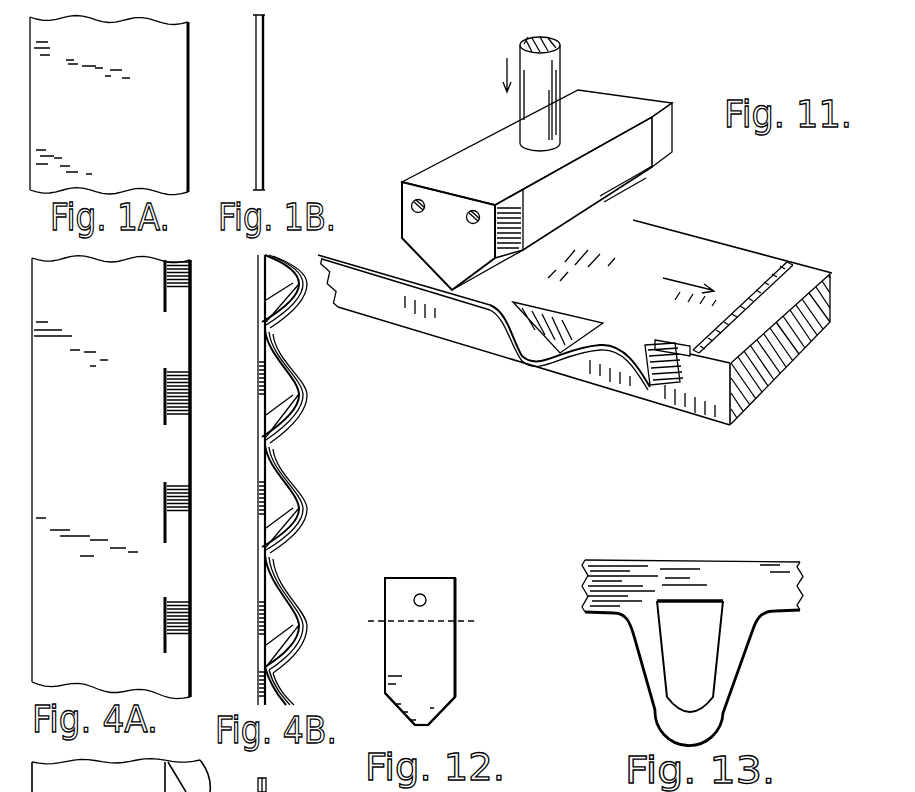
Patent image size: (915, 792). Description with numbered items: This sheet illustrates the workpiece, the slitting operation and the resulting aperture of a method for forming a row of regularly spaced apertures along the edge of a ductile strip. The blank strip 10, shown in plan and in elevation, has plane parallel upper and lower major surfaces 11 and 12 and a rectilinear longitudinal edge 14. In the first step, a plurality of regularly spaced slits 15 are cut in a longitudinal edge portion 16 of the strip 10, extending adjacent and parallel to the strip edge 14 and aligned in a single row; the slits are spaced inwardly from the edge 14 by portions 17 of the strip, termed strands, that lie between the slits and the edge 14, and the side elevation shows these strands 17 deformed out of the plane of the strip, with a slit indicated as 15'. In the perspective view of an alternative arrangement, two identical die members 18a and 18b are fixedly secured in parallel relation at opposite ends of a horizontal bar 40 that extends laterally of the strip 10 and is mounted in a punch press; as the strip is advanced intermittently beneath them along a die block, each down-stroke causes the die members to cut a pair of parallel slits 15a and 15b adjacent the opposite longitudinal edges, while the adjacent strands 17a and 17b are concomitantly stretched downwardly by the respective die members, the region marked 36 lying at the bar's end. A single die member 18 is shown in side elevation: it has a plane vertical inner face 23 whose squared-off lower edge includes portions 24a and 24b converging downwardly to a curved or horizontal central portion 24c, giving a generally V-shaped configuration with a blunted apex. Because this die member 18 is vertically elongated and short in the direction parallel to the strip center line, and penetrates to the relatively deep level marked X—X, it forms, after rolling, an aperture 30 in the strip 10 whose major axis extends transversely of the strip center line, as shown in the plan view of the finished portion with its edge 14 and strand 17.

In FIG. 1A, the strip 10 is at (112, 73).
In FIG. 1B, the strip 10 is at (265, 85).
In FIG. 4A, the strip 10 is at (104, 485).
In FIG. 4B, the strip 10 is at (268, 411).
In FIG. 11, the strip 10 is at (393, 268).
In FIG. 13, the strip 10 is at (626, 575).
In FIG. 1B, the upper major surface 11 is at (255, 153).
In FIG. 4B, the upper major surface 11 is at (258, 428).
In FIG. 1B, the lower major surface 12 is at (266, 125).
In FIG. 4B, the lower major surface 12 is at (268, 393).
In FIG. 1A, the longitudinal edge 14 is at (190, 108).
In FIG. 4A, the longitudinal edge 14 is at (192, 645).
In FIG. 11, the longitudinal edge 14 is at (478, 310).
In FIG. 13, the longitudinal edge 14 is at (634, 661).
In FIG. 4A, the slits 15 is at (148, 456).
In FIG. 4B, the slit 15' is at (243, 573).
In FIG. 11, the slit 15a is at (660, 350).
In FIG. 11, the slit 15b is at (697, 227).
In FIG. 1A, the longitudinal edge portion 16 is at (170, 162).
In FIG. 4A, the longitudinal edge portion 16 is at (192, 688).
In FIG. 4A, the strands 17 is at (191, 510).
In FIG. 4B, the strands 17 is at (303, 627).
In FIG. 13, the strands 17 is at (712, 727).
In FIG. 11, the strand 17a is at (647, 393).
In FIG. 11, the strand 17b is at (767, 247).
In FIG. 12, the die member 18 is at (437, 590).
In FIG. 11, the die member 18a is at (420, 228).
In FIG. 11, the die member 18b is at (638, 96).
In FIG. 12, the inner face 23 is at (440, 654).
In FIG. 12, the converging edge portion 24a is at (395, 710).
In FIG. 12, the converging edge portion 24b is at (445, 708).
In FIG. 12, the central edge portion 24c is at (425, 730).
In FIG. 13, the aperture 30 is at (698, 660).
In FIG. 11, the forming edge 36 is at (643, 197).
In FIG. 11, the horizontal bar 40 is at (478, 150).